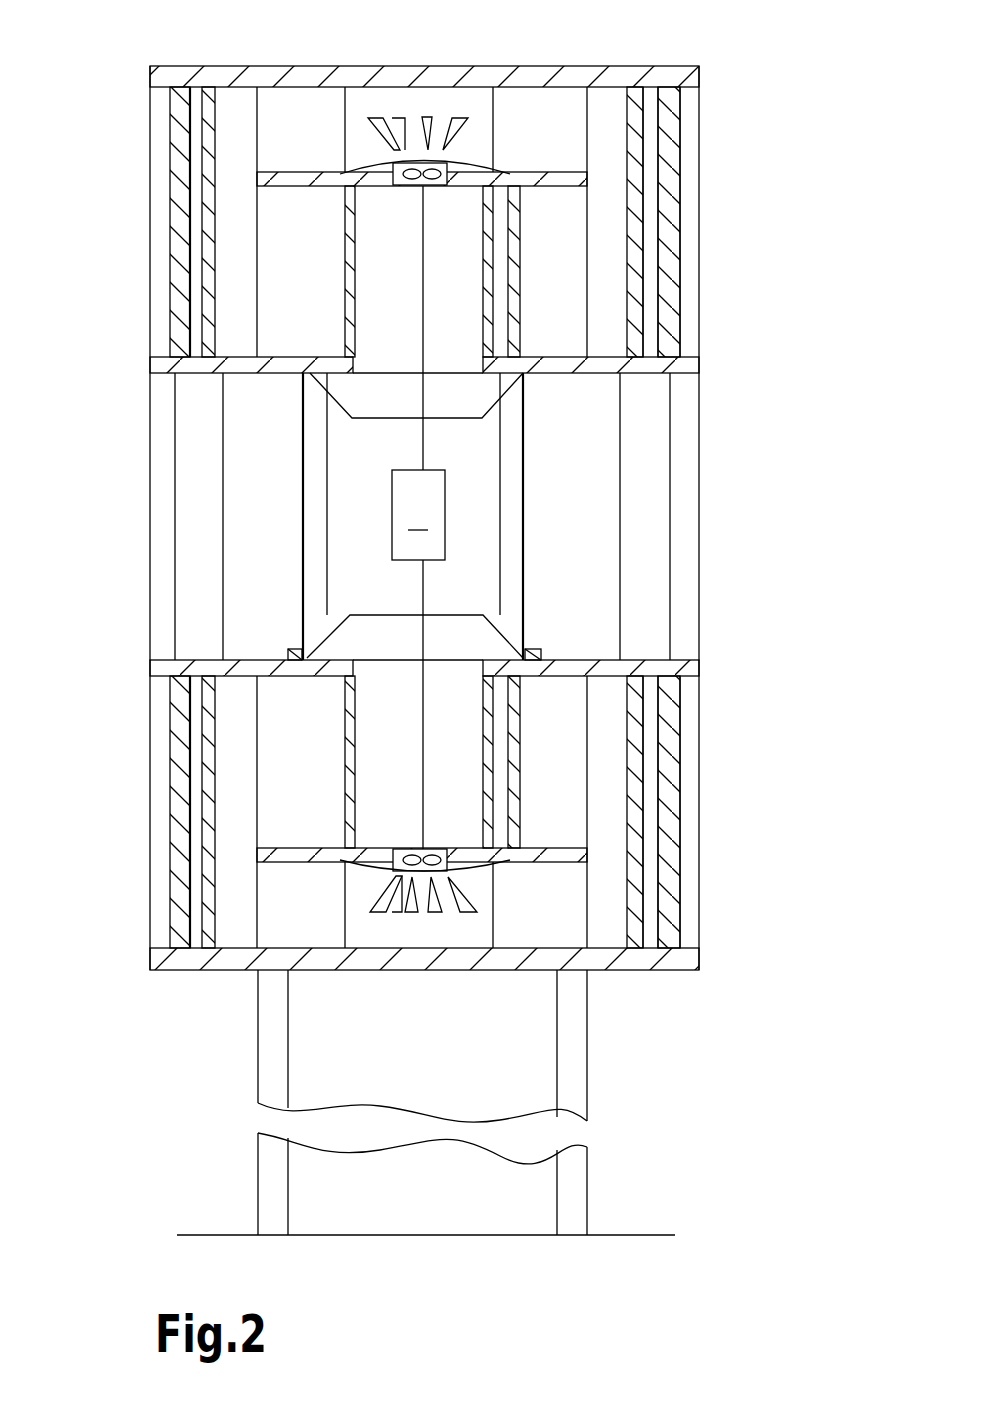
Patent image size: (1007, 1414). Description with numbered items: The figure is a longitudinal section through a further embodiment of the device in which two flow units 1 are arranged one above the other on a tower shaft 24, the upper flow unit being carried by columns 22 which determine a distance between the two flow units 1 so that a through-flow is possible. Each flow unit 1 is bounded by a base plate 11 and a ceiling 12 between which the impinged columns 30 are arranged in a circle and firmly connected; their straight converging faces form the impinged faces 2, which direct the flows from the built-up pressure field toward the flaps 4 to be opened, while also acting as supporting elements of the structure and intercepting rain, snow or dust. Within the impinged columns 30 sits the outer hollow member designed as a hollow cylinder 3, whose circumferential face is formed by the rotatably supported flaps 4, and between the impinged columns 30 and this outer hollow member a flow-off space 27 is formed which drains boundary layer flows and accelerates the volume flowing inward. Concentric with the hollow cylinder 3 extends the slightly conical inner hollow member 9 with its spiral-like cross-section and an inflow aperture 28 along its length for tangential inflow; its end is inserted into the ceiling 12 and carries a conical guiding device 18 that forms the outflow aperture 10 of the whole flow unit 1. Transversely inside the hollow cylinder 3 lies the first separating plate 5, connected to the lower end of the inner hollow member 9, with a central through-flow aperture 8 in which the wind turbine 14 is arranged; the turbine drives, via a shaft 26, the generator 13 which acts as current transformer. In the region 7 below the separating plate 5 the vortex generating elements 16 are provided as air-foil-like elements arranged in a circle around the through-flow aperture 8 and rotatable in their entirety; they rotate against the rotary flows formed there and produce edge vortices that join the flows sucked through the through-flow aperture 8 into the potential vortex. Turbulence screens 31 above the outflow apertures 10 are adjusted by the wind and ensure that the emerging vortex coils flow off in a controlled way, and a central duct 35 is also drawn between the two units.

The flow unit 1 is at (706, 209).
The impinged faces 2 is at (688, 302).
The hollow cylinder 3 is at (205, 262).
The flaps 4 is at (633, 338).
The first separating plate 5 is at (267, 195).
The region below the separating plate 7 is at (265, 138).
The through-flow aperture 8 is at (402, 149).
The inner hollow member 9 is at (348, 285).
The outflow aperture 10 is at (375, 420).
The base plate 11 is at (572, 74).
The ceiling 12 is at (192, 358).
The generator 13 is at (445, 517).
The wind turbine 14 is at (405, 187).
The vortex generating elements 16 is at (405, 148).
The conical guiding device 18 is at (355, 398).
The columns 22 is at (162, 598).
The tower shaft 24 is at (572, 1205).
The shaft 26 is at (432, 800).
The flow-off space 27 is at (645, 202).
The inflow aperture 28 is at (497, 320).
The impinged columns 30 is at (667, 337).
The turbulence screens 31 is at (597, 435).
The central duct 35 is at (337, 503).